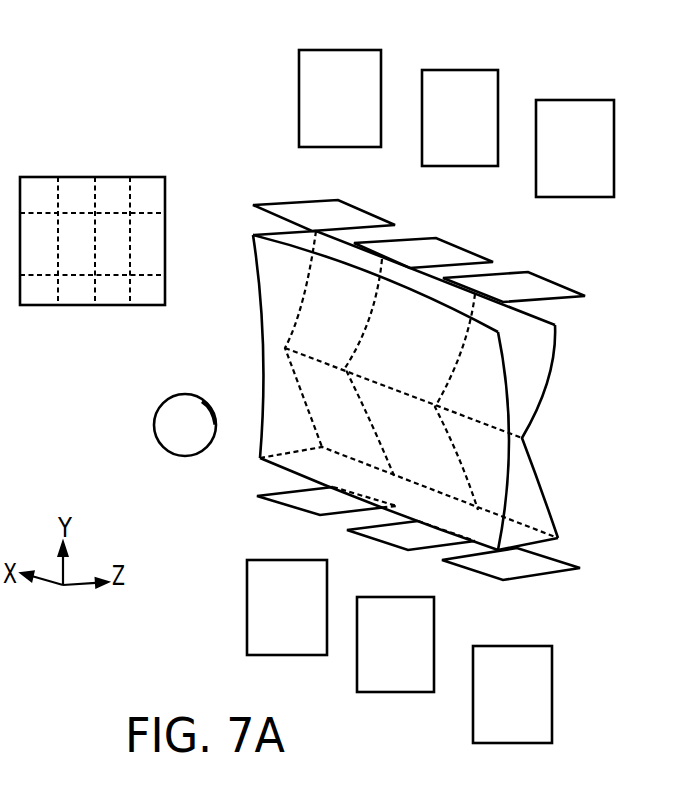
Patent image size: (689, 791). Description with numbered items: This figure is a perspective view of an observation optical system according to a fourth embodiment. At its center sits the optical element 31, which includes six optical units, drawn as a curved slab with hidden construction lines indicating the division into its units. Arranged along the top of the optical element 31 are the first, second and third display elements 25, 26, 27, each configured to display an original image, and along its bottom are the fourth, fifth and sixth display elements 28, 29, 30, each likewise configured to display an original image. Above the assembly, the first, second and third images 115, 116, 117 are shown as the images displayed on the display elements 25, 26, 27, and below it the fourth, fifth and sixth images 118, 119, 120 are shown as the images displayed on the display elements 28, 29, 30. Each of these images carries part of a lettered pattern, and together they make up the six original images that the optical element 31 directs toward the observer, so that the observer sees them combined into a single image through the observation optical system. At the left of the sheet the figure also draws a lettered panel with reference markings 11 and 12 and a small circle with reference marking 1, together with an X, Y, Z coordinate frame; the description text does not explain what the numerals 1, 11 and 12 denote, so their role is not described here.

The observer eye 1 is at (165, 412).
The display 11 is at (24, 178).
The display image 12 is at (92, 206).
The first display element 25 is at (300, 212).
The second display element 26 is at (447, 250).
The third display element 27 is at (537, 287).
The fourth display element 28 is at (282, 502).
The fifth display element 29 is at (387, 534).
The sixth display element 30 is at (527, 567).
The optical element 31 is at (533, 480).
The first image 115 is at (307, 63).
The second image 116 is at (458, 70).
The third image 117 is at (573, 100).
The fourth image 118 is at (247, 595).
The fifth image 119 is at (427, 620).
The sixth image 120 is at (575, 652).